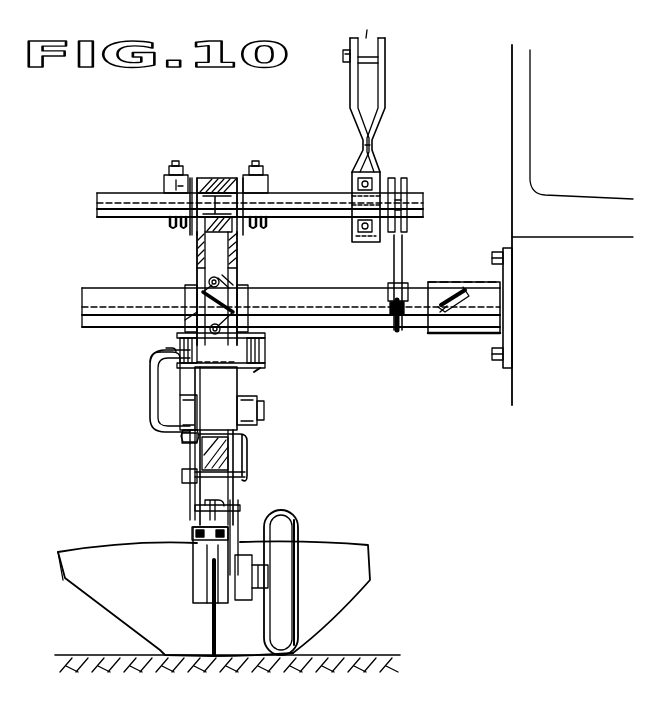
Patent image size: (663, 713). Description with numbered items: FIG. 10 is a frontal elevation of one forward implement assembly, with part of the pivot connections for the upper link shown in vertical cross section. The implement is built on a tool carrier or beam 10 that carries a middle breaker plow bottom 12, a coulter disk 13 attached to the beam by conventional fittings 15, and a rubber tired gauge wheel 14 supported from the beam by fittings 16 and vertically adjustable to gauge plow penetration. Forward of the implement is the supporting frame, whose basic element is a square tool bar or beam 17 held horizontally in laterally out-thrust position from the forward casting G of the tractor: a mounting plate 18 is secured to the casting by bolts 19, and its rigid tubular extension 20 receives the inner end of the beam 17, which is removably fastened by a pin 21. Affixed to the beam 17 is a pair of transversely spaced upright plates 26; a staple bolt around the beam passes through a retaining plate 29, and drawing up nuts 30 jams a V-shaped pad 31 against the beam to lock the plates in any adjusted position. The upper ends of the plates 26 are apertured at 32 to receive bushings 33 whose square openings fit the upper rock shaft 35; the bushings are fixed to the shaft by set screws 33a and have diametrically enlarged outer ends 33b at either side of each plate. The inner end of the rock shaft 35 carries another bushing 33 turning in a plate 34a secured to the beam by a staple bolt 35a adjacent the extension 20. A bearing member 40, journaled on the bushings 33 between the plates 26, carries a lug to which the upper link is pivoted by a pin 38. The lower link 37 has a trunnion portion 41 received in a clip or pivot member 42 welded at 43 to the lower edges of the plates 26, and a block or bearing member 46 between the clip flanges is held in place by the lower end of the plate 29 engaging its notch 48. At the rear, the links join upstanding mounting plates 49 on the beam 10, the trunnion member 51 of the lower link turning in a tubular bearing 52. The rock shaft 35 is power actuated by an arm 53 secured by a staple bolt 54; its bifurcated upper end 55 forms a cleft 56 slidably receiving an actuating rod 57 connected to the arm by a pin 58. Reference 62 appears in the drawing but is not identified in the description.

The forward casting G is at (510, 392).
The tool carrier or beam 10 is at (204, 455).
The middle breaker plow or bottom 12 is at (138, 616).
The coulter disk 13 is at (211, 628).
The rubber tired gauge wheel 14 is at (299, 522).
The fittings 15 is at (195, 510).
The fittings 16 is at (249, 479).
The tool bar or beam 17 is at (82, 302).
The mounting plate 18 is at (502, 366).
The bolts 19 is at (491, 356).
The tubular extension 20 is at (452, 283).
The pin 21 is at (450, 318).
The upright plates 26 is at (197, 262).
The retaining plate 29 is at (236, 300).
The nuts 30 is at (196, 298).
The V-shaped pad 31 is at (185, 321).
The apertures 32 is at (213, 178).
The bushings 33 is at (409, 181).
The set screws 33a is at (240, 176).
The enlarged ends of bushings 33b is at (193, 178).
The plate 34a is at (403, 244).
The upper rock shaft 35 is at (124, 198).
The staple bolt 35a is at (390, 322).
The lower link 37 is at (160, 380).
The pin 38 is at (230, 178).
The bearing member 40 is at (217, 288).
The trunnion portion 41 is at (158, 358).
The clip or pivot member 42 is at (253, 371).
The weld 43 is at (253, 334).
The block or bearing member 46 is at (266, 352).
The notch 48 is at (165, 372).
The mounting plates 49 is at (232, 375).
The trunnion portion or member 51 is at (266, 408).
The tubular bearing 52 is at (182, 433).
The lever or arm 53 is at (385, 130).
The staple bolt 54 is at (357, 217).
The bifurcated upper end 55 is at (386, 84).
The cleft 56 is at (362, 80).
The actuating rod 57 is at (369, 22).
The pin 58 is at (342, 54).
The clamp 62 is at (173, 167).